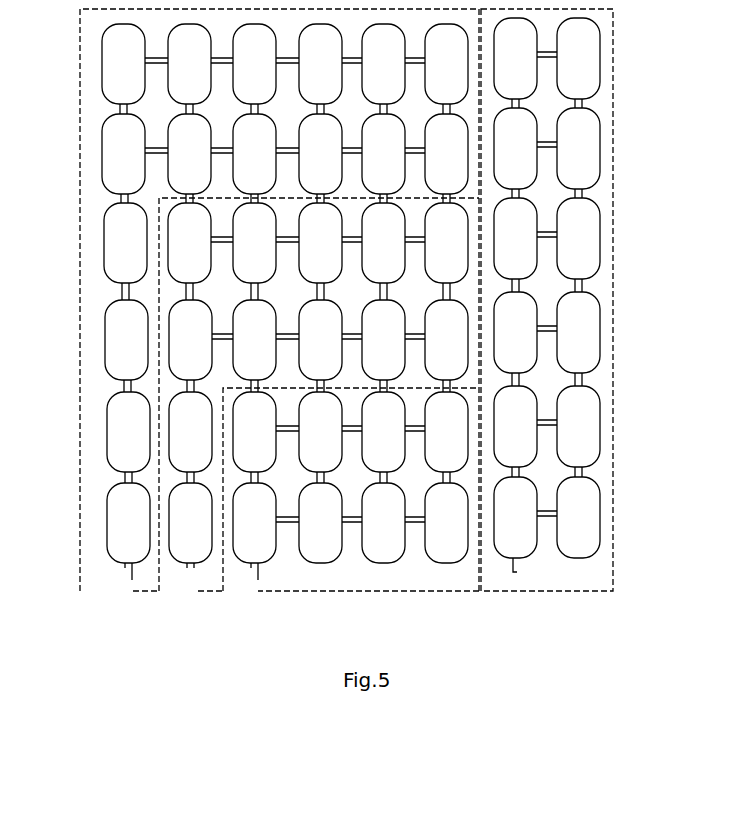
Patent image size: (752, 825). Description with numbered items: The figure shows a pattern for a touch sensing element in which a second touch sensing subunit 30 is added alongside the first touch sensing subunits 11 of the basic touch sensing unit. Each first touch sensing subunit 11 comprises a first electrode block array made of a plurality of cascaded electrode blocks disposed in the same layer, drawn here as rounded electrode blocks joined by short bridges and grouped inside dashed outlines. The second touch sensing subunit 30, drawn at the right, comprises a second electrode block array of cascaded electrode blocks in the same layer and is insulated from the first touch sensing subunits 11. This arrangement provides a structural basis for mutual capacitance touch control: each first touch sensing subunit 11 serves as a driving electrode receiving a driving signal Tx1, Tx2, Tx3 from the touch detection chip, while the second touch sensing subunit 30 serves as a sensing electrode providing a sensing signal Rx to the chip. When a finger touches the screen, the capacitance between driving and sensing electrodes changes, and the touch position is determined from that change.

The first touch sensing subunit 11 is at (92, 103).
The second touch sensing subunit 30 is at (602, 108).
The driving signal Tx1 is at (279, 300).
The driving signal Tx2 is at (319, 394).
The driving signal Tx3 is at (351, 489).
The sensing signal Rx is at (529, 569).